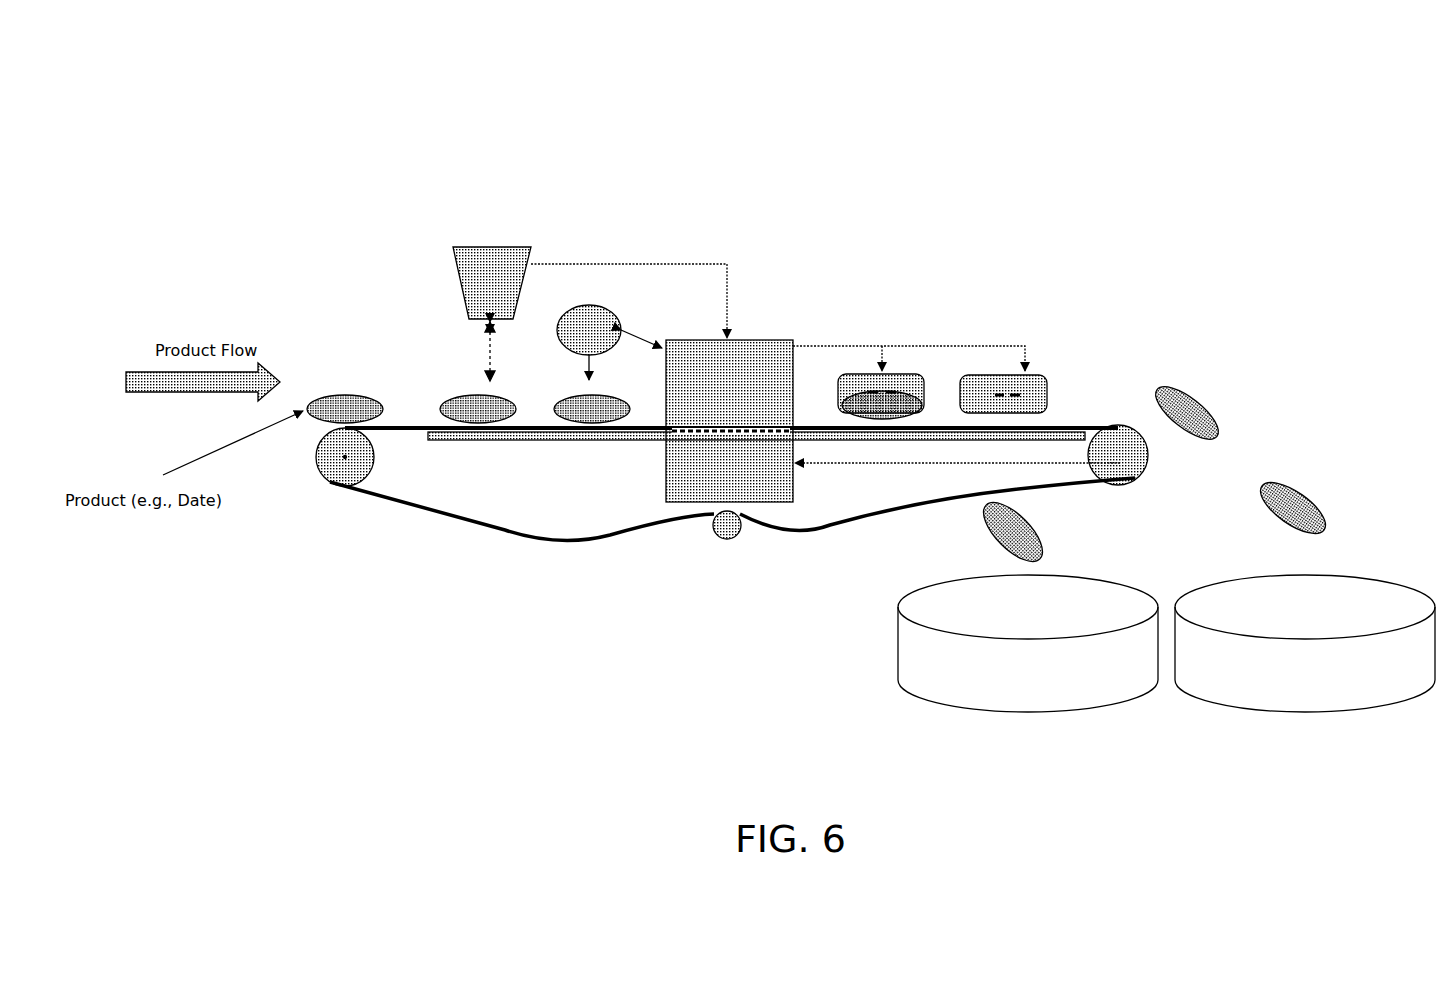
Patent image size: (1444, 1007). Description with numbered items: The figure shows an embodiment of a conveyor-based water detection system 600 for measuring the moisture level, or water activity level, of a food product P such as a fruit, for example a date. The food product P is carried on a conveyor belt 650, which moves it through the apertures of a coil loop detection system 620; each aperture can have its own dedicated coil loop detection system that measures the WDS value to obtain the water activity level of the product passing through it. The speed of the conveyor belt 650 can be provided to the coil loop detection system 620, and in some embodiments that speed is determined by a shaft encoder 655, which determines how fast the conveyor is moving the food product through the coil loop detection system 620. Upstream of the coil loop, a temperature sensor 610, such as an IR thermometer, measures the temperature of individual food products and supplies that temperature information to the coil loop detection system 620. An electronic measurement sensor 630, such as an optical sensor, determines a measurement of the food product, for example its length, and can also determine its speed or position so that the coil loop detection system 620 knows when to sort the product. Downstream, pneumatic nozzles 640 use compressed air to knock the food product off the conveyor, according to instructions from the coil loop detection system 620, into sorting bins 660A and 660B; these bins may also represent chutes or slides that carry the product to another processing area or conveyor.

The conveyor-based water detection system 600 is at (520, 82).
The temperature sensor 610 is at (478, 298).
The coil loop detection system 620 is at (752, 342).
The electronic measurement sensor 630 is at (586, 306).
The pneumatic nozzles 640 is at (906, 380).
The conveyor belt 650 is at (582, 438).
The shaft encoder 655 is at (1128, 476).
The sorting bin 660A is at (908, 648).
The sorting bin 660B is at (1220, 696).
The food product P is at (340, 398).